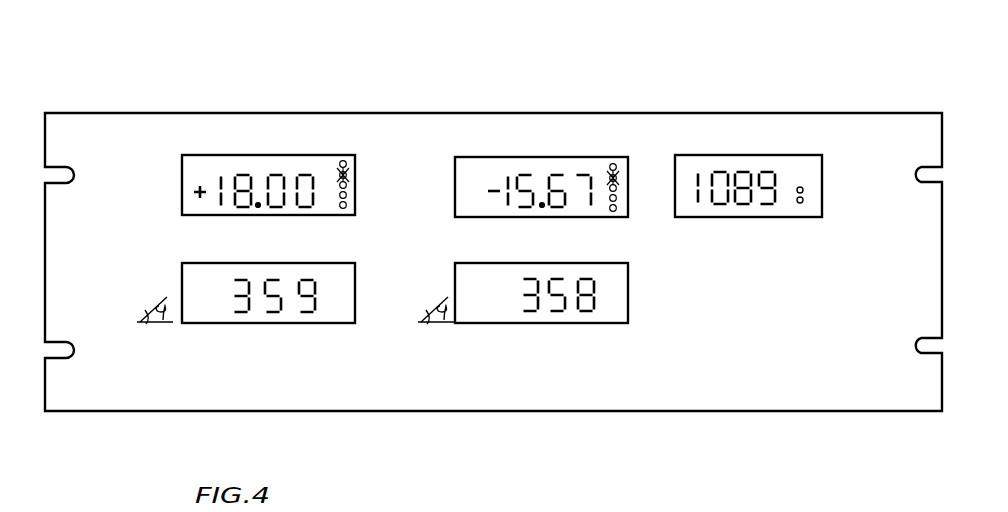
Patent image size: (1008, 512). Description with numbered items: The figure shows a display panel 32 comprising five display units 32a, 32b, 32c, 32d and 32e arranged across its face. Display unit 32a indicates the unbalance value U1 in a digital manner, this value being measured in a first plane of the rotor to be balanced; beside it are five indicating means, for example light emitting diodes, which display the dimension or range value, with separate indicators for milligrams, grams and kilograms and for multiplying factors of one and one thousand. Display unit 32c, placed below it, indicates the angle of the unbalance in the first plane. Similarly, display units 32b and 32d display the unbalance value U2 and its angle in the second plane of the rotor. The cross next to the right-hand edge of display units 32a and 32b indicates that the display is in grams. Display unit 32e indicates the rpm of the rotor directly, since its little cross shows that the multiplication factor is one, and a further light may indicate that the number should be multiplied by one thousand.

The display panel 32 is at (418, 113).
The display unit 32a is at (279, 155).
The display unit 32b is at (559, 157).
The display unit 32c is at (284, 263).
The display unit 32d is at (556, 263).
The display unit 32e is at (738, 155).